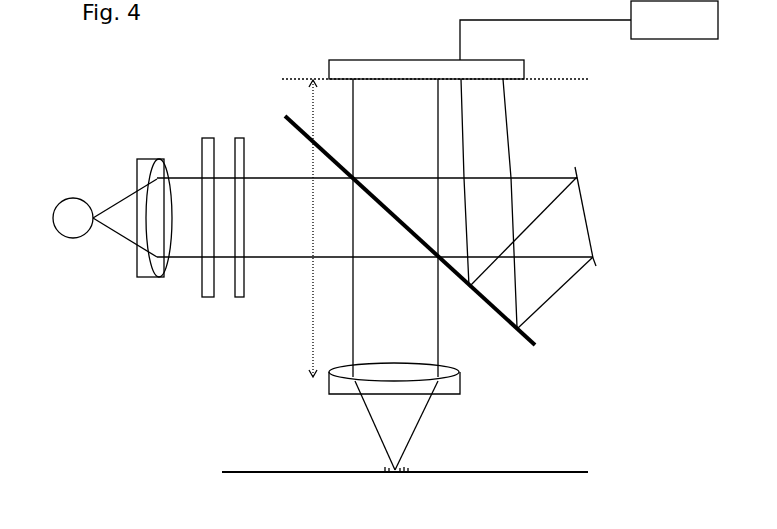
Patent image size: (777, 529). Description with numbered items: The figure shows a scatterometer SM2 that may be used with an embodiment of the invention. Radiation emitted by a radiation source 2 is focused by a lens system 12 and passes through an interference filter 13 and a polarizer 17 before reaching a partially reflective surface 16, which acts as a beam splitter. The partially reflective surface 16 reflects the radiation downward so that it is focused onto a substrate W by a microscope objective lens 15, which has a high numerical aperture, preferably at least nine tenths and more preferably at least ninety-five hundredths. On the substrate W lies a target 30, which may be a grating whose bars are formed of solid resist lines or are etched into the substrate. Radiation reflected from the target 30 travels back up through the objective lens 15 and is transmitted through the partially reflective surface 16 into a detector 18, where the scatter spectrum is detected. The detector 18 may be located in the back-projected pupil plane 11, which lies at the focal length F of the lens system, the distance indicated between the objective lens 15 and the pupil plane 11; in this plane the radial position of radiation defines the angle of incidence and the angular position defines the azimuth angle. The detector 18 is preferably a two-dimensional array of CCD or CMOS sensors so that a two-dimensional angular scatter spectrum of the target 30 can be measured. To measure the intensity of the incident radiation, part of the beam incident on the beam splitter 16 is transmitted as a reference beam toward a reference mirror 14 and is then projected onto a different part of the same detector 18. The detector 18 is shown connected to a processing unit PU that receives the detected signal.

The radiation source 2 is at (78, 226).
The back-projected pupil plane 11 is at (588, 79).
The lens system 12 is at (145, 158).
The interference filter 13 is at (210, 138).
The reference mirror 14 is at (578, 177).
The microscope objective lens 15 is at (328, 388).
The partially reflective surface 16 is at (522, 339).
The polarizer 17 is at (240, 138).
The detector 18 is at (359, 60).
The substrate target 30 is at (402, 480).
The processing unit PU is at (589, 30).
The substrate W is at (500, 471).
The focal length F is at (307, 228).
The scatterometer SM2 is at (98, 148).